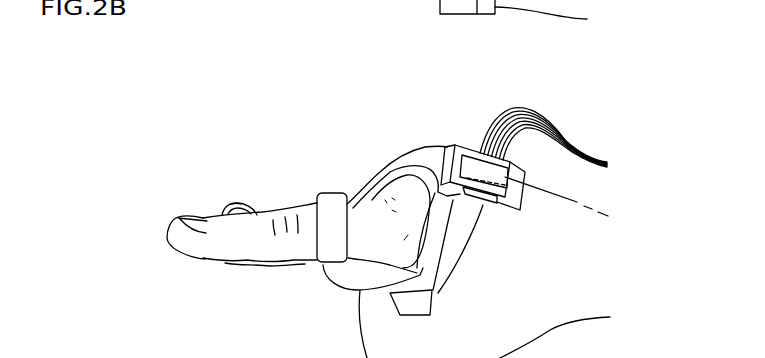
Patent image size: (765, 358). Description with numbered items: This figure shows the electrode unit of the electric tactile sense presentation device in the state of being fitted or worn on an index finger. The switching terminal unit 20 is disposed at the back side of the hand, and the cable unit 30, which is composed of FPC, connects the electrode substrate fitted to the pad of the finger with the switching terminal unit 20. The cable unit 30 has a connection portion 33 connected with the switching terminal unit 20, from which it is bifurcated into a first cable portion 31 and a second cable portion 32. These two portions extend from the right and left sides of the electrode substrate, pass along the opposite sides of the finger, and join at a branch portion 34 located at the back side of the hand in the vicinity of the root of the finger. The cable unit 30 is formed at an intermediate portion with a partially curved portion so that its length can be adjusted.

The switching terminal unit 20 is at (445, 145).
The cable unit 30 is at (250, 210).
The first cable portion 31 is at (237, 202).
The second cable portion 32 is at (242, 266).
The connection portion 33 is at (438, 178).
The branch portion 34 is at (397, 168).